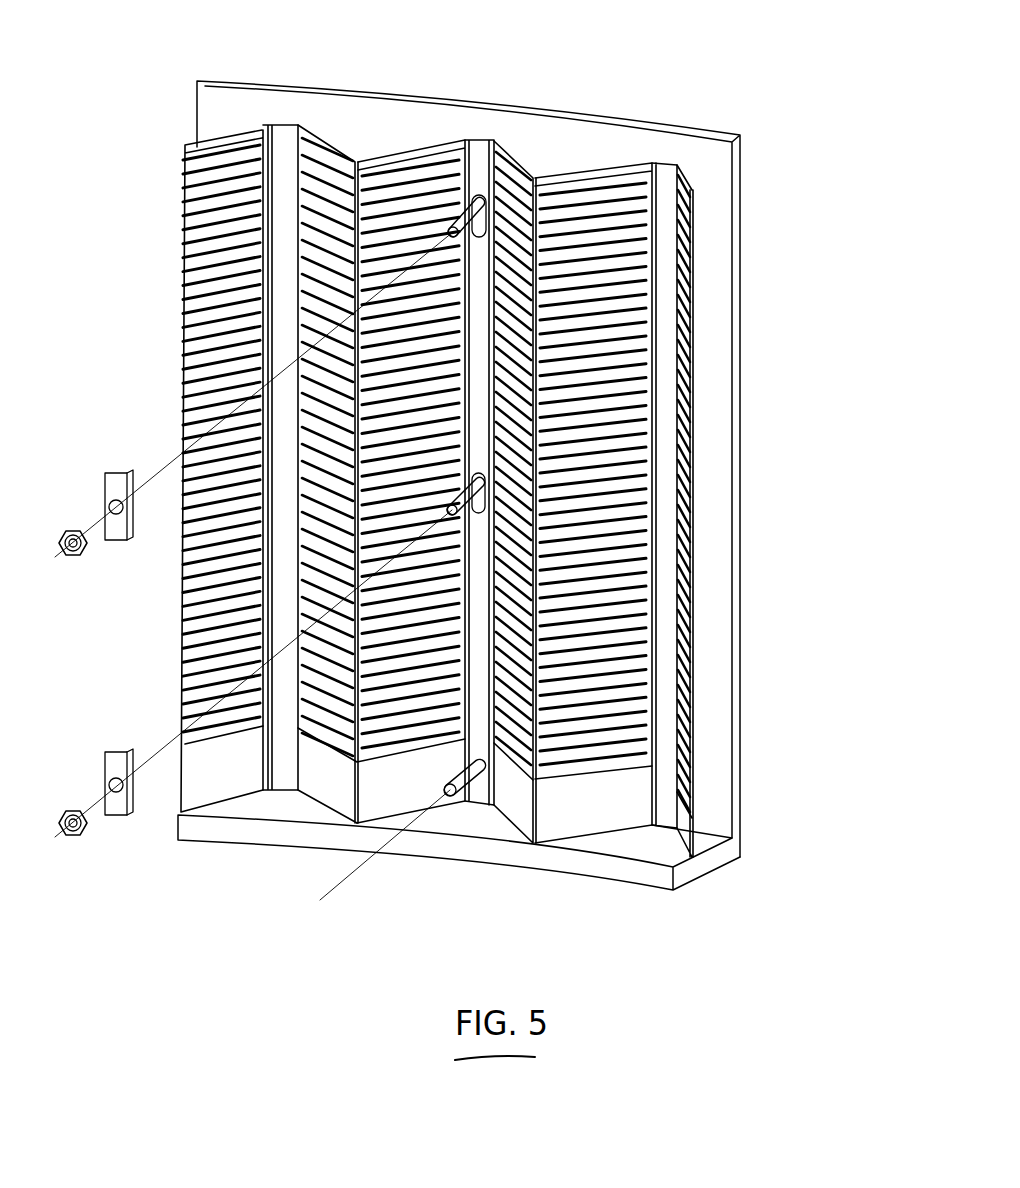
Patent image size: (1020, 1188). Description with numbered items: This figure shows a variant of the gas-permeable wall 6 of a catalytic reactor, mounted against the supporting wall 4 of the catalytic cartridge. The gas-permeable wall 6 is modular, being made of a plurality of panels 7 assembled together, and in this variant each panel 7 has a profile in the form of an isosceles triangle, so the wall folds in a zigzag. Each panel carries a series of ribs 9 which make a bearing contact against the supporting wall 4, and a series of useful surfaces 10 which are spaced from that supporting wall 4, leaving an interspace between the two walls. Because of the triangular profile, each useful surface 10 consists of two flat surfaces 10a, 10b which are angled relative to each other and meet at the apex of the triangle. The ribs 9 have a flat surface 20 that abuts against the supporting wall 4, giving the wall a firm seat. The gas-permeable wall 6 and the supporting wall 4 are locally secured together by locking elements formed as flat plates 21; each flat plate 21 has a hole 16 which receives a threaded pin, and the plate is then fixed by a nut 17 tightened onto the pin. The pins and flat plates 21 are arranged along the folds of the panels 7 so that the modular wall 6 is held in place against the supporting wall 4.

The supporting wall 4 is at (720, 284).
The gas-permeable wall 6 is at (712, 444).
The panel 7 is at (297, 799).
The rib 9 is at (464, 130).
The useful surface 10 is at (393, 143).
The flat surface 10a is at (608, 177).
The flat surface 10b is at (514, 175).
The hole 16 is at (120, 513).
The nut 17 is at (75, 553).
The flat surface 20 is at (479, 155).
The flat plate 21 is at (118, 488).